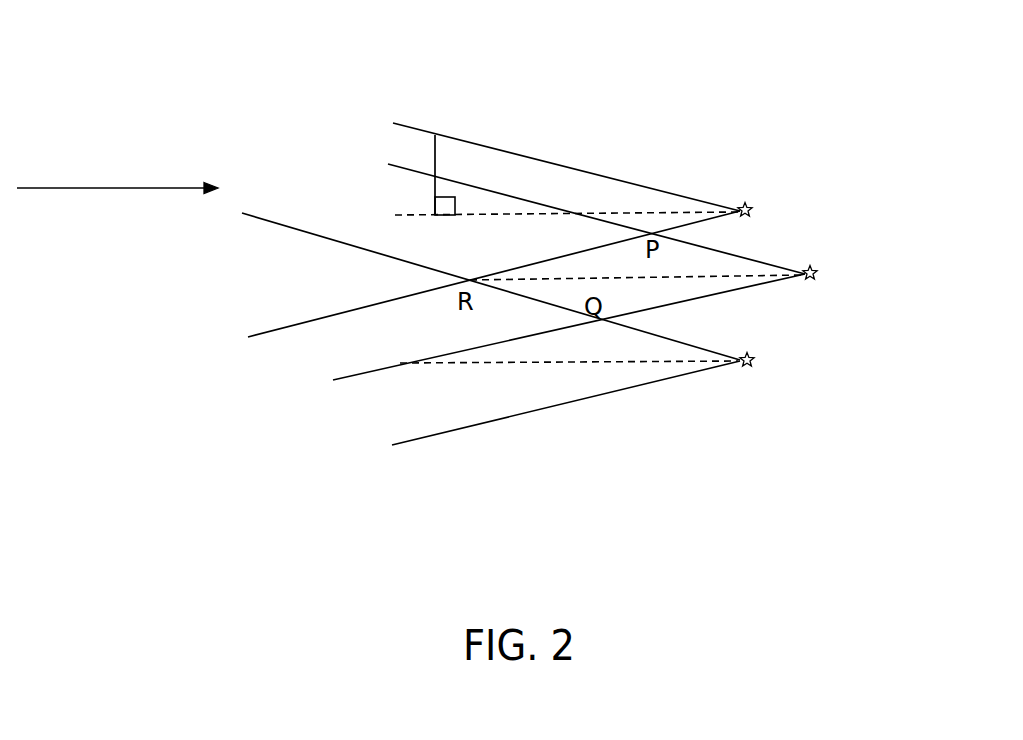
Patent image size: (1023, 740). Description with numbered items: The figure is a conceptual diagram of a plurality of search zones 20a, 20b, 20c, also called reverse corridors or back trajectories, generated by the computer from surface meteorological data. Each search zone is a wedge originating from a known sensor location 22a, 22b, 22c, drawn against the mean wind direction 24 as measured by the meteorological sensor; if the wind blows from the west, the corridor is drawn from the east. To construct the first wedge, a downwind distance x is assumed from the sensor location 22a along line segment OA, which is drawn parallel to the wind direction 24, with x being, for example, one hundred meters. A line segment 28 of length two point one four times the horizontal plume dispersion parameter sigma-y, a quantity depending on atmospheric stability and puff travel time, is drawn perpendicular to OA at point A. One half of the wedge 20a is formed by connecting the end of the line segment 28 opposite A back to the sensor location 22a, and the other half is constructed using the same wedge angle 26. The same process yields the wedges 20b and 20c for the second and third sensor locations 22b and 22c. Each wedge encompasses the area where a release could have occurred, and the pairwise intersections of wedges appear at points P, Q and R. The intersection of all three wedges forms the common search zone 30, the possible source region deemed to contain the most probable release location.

The search zone 20a is at (513, 153).
The search zone 20b is at (703, 295).
The search zone 20c is at (525, 414).
The sensor location 22a is at (853, 170).
The sensor location 22b is at (910, 293).
The sensor location 22c is at (853, 390).
The mean wind direction 24 is at (222, 148).
The wedge angle 26 is at (676, 206).
The line segment 28 is at (443, 152).
The common search zone 30 is at (290, 315).